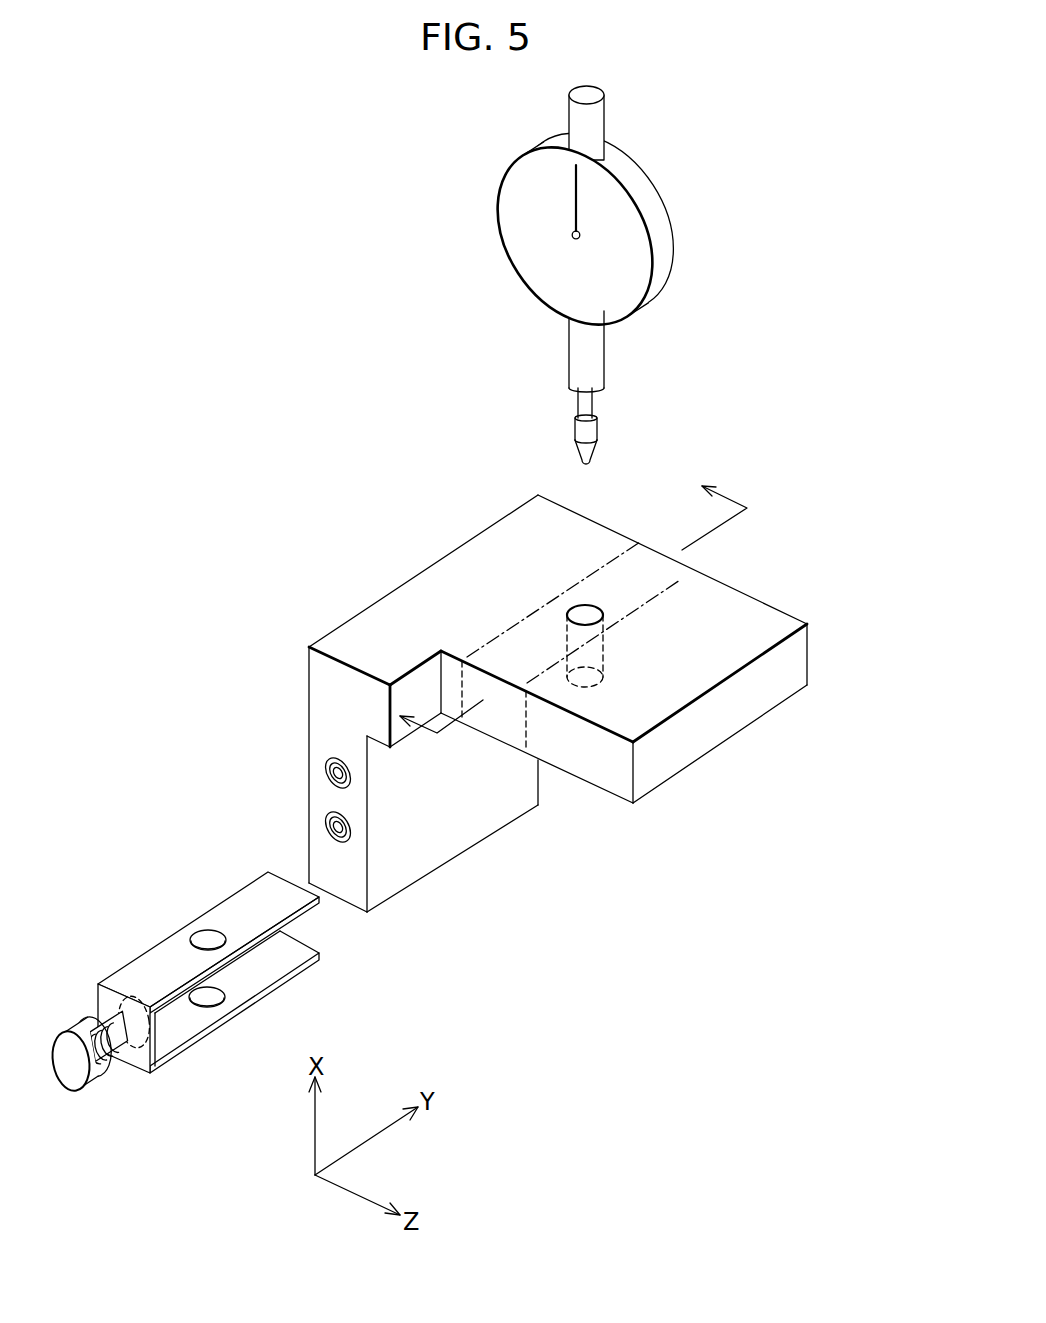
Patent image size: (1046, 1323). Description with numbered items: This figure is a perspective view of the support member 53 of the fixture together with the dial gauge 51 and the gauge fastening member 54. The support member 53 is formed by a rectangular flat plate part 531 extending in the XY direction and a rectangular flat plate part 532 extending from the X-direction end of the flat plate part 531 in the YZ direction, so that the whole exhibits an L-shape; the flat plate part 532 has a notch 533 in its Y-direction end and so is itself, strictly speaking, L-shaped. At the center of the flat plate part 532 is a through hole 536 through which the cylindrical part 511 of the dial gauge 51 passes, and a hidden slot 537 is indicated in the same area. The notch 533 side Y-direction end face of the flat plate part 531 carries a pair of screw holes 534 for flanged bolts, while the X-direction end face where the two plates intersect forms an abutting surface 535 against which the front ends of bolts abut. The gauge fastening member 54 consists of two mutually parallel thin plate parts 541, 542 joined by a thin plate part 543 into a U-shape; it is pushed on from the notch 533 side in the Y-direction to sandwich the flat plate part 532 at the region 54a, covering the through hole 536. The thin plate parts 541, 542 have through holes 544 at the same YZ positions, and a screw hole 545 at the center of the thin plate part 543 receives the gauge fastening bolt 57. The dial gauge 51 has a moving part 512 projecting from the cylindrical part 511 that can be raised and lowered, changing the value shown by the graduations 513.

The dial gauge 51 is at (618, 275).
The cylindrical part 511 is at (604, 361).
The moving part 512 is at (593, 410).
The graduations 513 is at (574, 202).
The support member 53 is at (557, 693).
The flat plate part 531 is at (427, 833).
The flat plate part 532 is at (810, 652).
The notch 533 is at (470, 680).
The screw holes 534 is at (323, 822).
The abutting surface 535 is at (463, 566).
The through hole 536 is at (593, 613).
The slot 537 is at (495, 716).
The gauge fastening member 54 is at (231, 986).
The region 54a is at (570, 590).
The thin plate part 541 is at (248, 893).
The thin plate part 542 is at (303, 970).
The thin plate part 543 is at (107, 1007).
The through holes 544 is at (207, 930).
The screw hole 545 is at (152, 1048).
The gauge fastening bolt 57 is at (78, 1072).